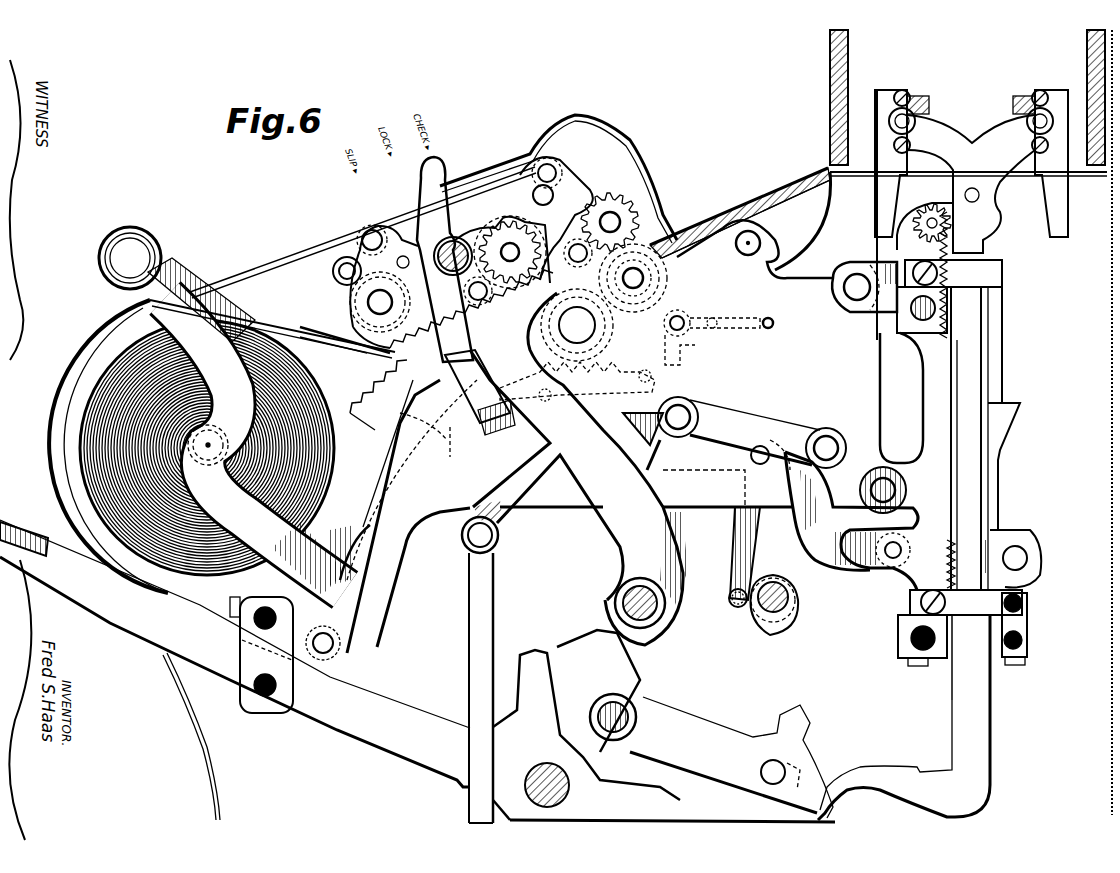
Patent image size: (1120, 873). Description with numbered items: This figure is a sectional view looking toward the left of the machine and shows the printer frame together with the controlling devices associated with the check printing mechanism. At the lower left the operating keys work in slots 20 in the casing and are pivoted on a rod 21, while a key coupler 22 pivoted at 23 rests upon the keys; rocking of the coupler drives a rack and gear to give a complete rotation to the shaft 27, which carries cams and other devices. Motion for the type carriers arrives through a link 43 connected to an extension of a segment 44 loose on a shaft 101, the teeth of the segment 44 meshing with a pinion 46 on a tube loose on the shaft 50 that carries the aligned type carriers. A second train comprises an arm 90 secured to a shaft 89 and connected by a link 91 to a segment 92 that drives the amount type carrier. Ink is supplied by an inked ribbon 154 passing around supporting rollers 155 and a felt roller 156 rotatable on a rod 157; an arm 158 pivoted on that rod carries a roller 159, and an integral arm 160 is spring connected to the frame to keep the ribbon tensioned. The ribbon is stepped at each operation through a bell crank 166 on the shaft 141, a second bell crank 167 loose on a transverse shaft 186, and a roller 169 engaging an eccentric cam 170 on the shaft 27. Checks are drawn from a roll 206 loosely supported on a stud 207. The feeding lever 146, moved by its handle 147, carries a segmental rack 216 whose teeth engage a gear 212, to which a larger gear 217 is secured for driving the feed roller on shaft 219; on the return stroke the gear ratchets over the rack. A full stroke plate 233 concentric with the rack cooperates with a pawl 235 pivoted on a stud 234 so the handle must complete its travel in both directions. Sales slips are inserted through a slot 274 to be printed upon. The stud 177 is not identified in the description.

The slots 20 is at (212, 742).
The rod 21 is at (547, 765).
The key coupler 22 is at (690, 712).
The pivot 23 is at (625, 702).
The shaft 27 is at (780, 590).
The link 43 is at (495, 628).
The segment 44 is at (451, 282).
The pinion 46 is at (595, 275).
The shaft 50 is at (514, 248).
The shaft 89 is at (890, 560).
The arm 90 is at (851, 521).
The link 91 is at (710, 412).
The segment 92 is at (506, 415).
The shaft 101 is at (668, 620).
The shaft 141 is at (490, 518).
The feeding lever 146 is at (360, 530).
The operating handle 147 is at (130, 258).
The inked ribbon 154 is at (527, 175).
The supporting rollers 155 is at (575, 147).
The roller 156 is at (368, 305).
The rod 157 is at (345, 344).
The arm 158 is at (352, 298).
The roller 159 is at (338, 270).
The arm 160 is at (403, 256).
The bell crank 166 is at (412, 480).
The bell crank 167 is at (704, 488).
The roller 169 is at (740, 608).
The eccentric cam 170 is at (773, 630).
The stud 177 is at (758, 236).
The transverse shaft 186 is at (750, 456).
The roll 206 is at (440, 168).
The stud 207 is at (228, 445).
The gear 212 is at (599, 325).
The segmental rack 216 is at (476, 406).
The gear 217 is at (530, 345).
The shaft 219 is at (640, 276).
The plate 233 is at (577, 381).
The stud 234 is at (682, 316).
The pawl 235 is at (690, 350).
The slot 274 is at (265, 318).